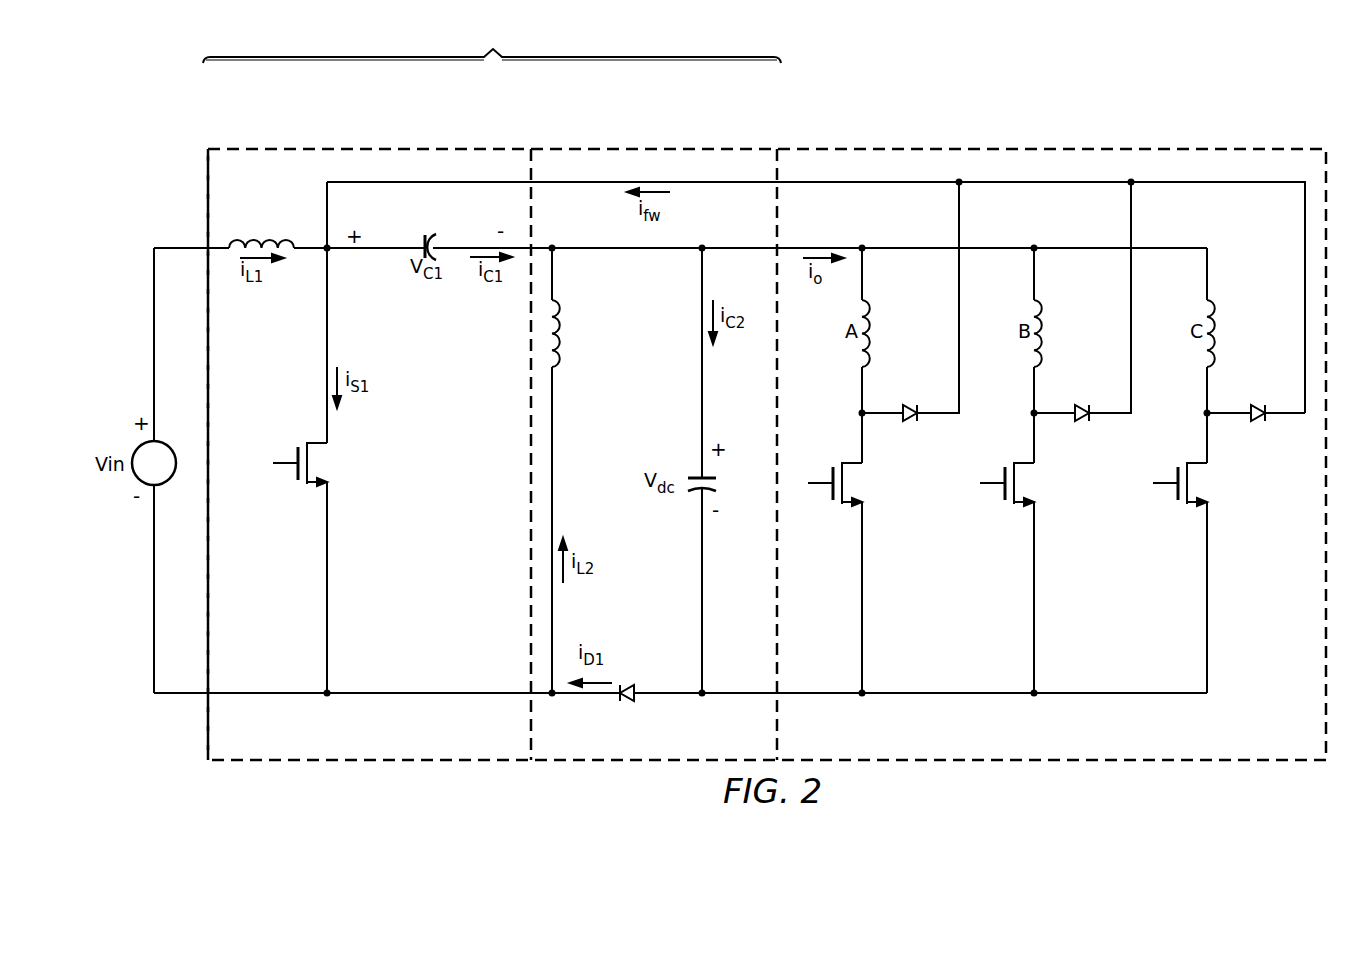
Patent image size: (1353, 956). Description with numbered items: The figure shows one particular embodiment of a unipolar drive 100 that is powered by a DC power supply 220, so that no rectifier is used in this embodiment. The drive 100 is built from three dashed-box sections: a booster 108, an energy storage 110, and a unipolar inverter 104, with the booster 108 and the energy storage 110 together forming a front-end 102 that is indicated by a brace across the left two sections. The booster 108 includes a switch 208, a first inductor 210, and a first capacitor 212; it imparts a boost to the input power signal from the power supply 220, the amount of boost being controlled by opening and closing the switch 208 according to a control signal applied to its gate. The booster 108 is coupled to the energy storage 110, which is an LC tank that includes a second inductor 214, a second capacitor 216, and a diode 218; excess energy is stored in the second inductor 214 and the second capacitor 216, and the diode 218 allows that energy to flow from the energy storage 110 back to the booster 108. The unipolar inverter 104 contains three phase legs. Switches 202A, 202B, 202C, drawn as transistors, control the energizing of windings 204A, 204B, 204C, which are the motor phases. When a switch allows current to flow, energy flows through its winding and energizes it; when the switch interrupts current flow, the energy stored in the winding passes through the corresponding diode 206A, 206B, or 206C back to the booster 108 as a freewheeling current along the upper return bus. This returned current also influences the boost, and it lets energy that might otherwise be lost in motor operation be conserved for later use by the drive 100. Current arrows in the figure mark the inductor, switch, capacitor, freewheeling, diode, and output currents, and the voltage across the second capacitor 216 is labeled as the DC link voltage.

The unipolar drive 100 is at (1182, 806).
The front-end 102 is at (492, 43).
The unipolar inverter 104 is at (1183, 140).
The booster 108 is at (250, 140).
The energy storage 110 is at (708, 140).
The switch 202A is at (834, 498).
The switch 202B is at (1005, 492).
The switch 202C is at (1178, 492).
The winding 204A is at (877, 325).
The winding 204B is at (1049, 325).
The winding 204C is at (1224, 325).
The diode 206A is at (906, 405).
The diode 206B is at (1078, 405).
The diode 206C is at (1253, 405).
The switch 208 is at (296, 477).
The inductor L1 210 is at (283, 240).
The capacitor C1 212 is at (432, 232).
The inductor L2 214 is at (570, 309).
The capacitor C2 216 is at (698, 478).
The diode D1 218 is at (632, 682).
The DC power supply 220 is at (134, 449).